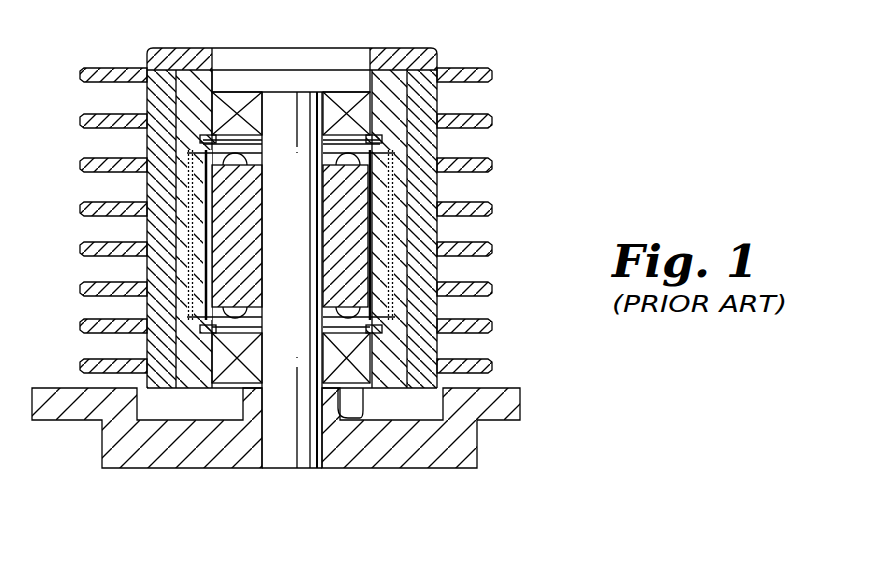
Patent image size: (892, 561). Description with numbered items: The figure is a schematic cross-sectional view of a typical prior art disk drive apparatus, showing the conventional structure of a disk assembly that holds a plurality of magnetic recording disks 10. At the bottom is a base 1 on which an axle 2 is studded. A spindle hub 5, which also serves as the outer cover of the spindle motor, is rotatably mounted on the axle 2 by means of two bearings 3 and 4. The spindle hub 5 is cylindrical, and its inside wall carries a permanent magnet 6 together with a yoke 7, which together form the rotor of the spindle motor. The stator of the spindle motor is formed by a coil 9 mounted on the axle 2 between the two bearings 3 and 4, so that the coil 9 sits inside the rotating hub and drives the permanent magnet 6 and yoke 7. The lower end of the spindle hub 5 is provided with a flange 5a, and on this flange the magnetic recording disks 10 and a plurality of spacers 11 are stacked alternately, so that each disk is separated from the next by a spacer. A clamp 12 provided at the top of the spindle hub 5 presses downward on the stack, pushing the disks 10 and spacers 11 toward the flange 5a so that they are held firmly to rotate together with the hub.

The base 1 is at (470, 455).
The axle 2 is at (287, 108).
The bearing 3 is at (233, 98).
The bearing 4 is at (347, 370).
The spindle hub 5 is at (393, 100).
The flange 5a is at (414, 382).
The permanent magnet 6 is at (398, 270).
The yoke 7 is at (405, 303).
The coil 9 is at (363, 232).
The magnetic recording disk 10 is at (480, 67).
The spacer 11 is at (442, 145).
The clamp 12 is at (436, 55).